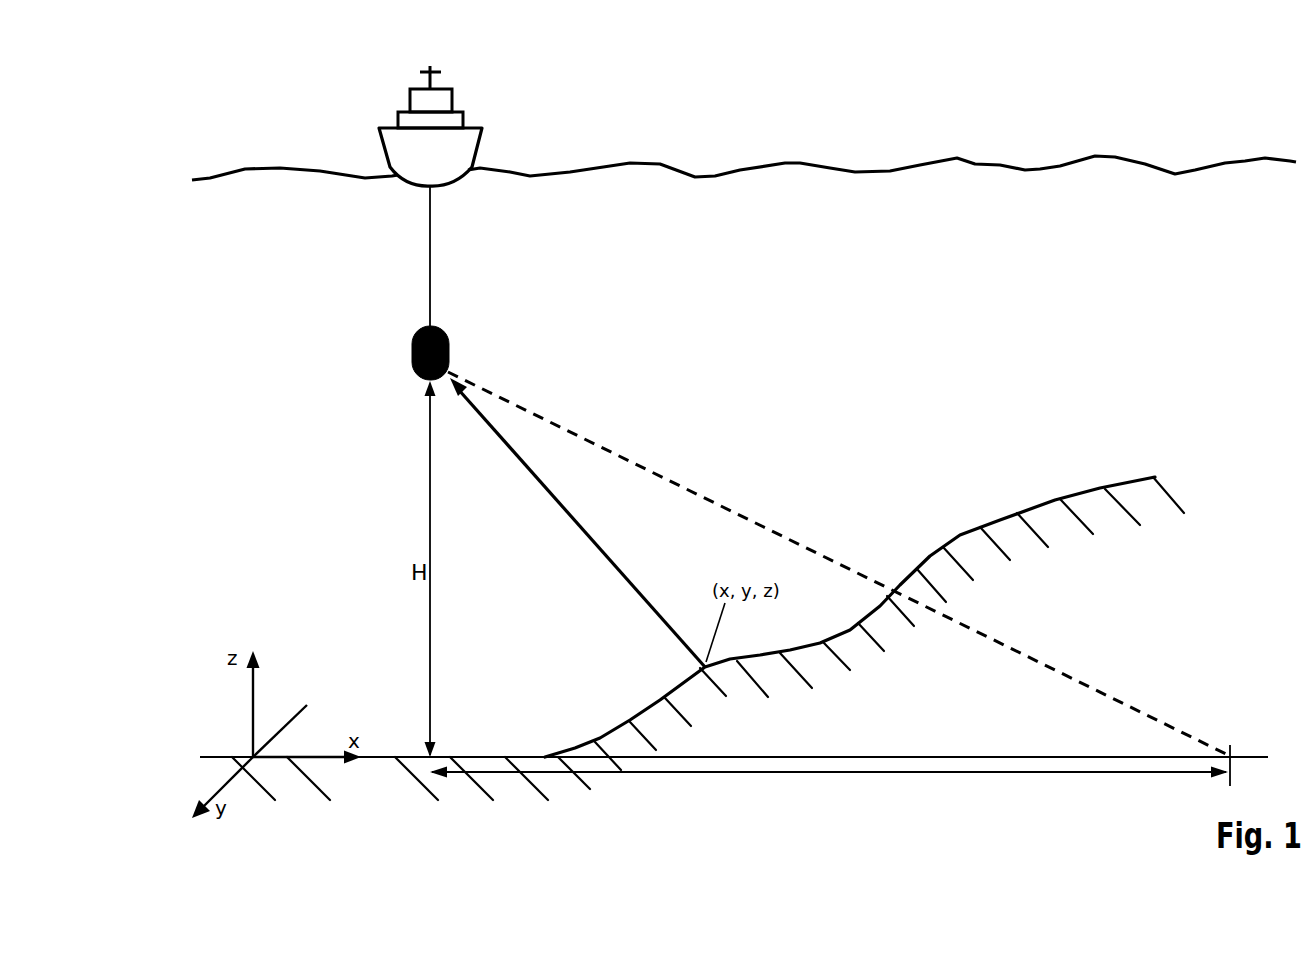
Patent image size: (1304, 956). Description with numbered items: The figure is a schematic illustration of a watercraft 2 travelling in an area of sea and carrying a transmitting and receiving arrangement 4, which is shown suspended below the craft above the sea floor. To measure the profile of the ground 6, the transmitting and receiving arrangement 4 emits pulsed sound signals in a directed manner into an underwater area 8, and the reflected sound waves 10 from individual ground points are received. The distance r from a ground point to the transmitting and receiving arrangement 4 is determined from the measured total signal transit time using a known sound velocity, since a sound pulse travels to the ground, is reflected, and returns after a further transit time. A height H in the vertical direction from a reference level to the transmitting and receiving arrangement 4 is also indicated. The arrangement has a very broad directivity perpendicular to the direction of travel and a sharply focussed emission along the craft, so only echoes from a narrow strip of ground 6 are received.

The watercraft 2 is at (467, 138).
The transmitting and receiving arrangement 4 is at (412, 355).
The ground 6 is at (1047, 505).
The underwater area 8 is at (910, 773).
The reflected sound waves 10 is at (616, 560).